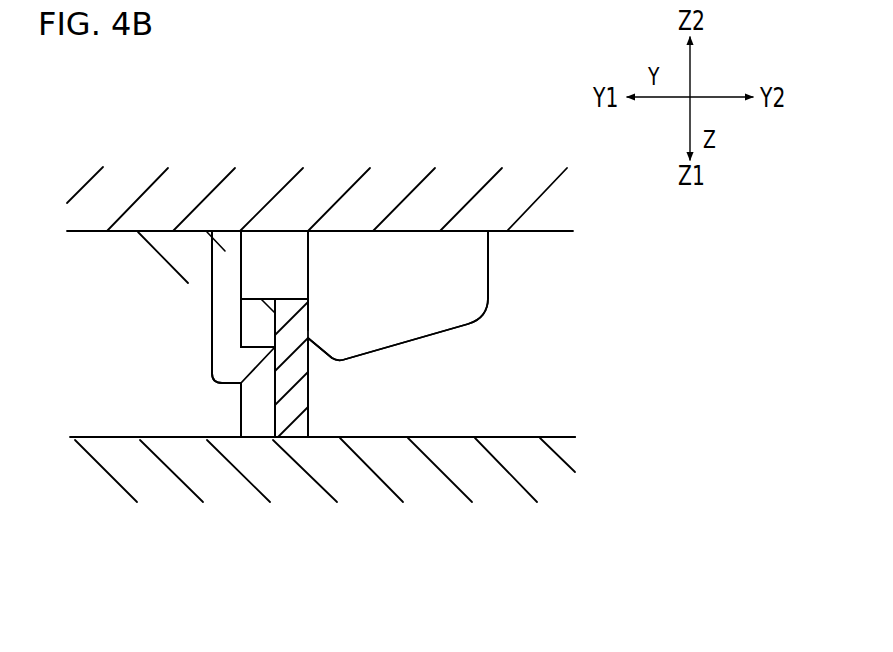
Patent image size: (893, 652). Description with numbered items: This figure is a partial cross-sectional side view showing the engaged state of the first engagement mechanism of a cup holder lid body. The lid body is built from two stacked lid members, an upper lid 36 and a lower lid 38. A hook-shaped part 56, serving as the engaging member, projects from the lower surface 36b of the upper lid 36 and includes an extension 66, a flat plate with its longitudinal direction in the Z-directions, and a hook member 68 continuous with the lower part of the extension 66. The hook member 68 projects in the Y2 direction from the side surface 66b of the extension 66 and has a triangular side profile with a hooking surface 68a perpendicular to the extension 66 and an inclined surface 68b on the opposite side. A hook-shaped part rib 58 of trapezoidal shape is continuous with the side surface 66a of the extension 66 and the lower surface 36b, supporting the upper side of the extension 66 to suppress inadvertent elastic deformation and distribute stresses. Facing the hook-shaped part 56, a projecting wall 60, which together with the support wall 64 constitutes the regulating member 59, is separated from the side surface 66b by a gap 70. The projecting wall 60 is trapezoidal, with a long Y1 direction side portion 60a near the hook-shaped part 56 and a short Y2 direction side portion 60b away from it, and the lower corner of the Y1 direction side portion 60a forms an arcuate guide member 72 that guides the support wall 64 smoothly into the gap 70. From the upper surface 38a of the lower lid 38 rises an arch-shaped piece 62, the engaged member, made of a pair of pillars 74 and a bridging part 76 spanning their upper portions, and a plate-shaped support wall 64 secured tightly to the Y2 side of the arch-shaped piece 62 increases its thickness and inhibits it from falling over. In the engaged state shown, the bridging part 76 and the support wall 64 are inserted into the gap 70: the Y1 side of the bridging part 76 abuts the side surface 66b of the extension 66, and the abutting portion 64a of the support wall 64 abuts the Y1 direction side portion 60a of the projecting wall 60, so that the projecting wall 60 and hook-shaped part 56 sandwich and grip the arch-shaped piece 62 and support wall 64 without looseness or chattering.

The upper lid 36 is at (400, 196).
The lower surface of the upper lid 36b is at (527, 234).
The lower lid 38 is at (415, 468).
The upper surface of the lower lid 38a is at (527, 435).
The hook-shaped part 56 is at (194, 306).
The hook-shaped part rib 58 is at (170, 250).
The regulating member 59 is at (381, 334).
The projecting wall 60 is at (440, 320).
The Y1 direction side portion 60a is at (308, 262).
The Y2 direction side portion 60b is at (490, 288).
The arch-shaped piece 62 is at (228, 415).
The support wall 64 is at (322, 411).
The abutting portion 64a is at (312, 312).
The extension 66 is at (198, 232).
The side surface in the Y1 direction 66a is at (210, 283).
The side surface in the Y2 direction 66b is at (243, 273).
The hook member 68 is at (230, 383).
The hooking surface 68a is at (262, 345).
The inclined surface 68b is at (262, 372).
The gap 70 is at (277, 262).
The guide member 72 is at (322, 368).
The pillars 74 is at (283, 422).
The bridging part 76 is at (268, 299).